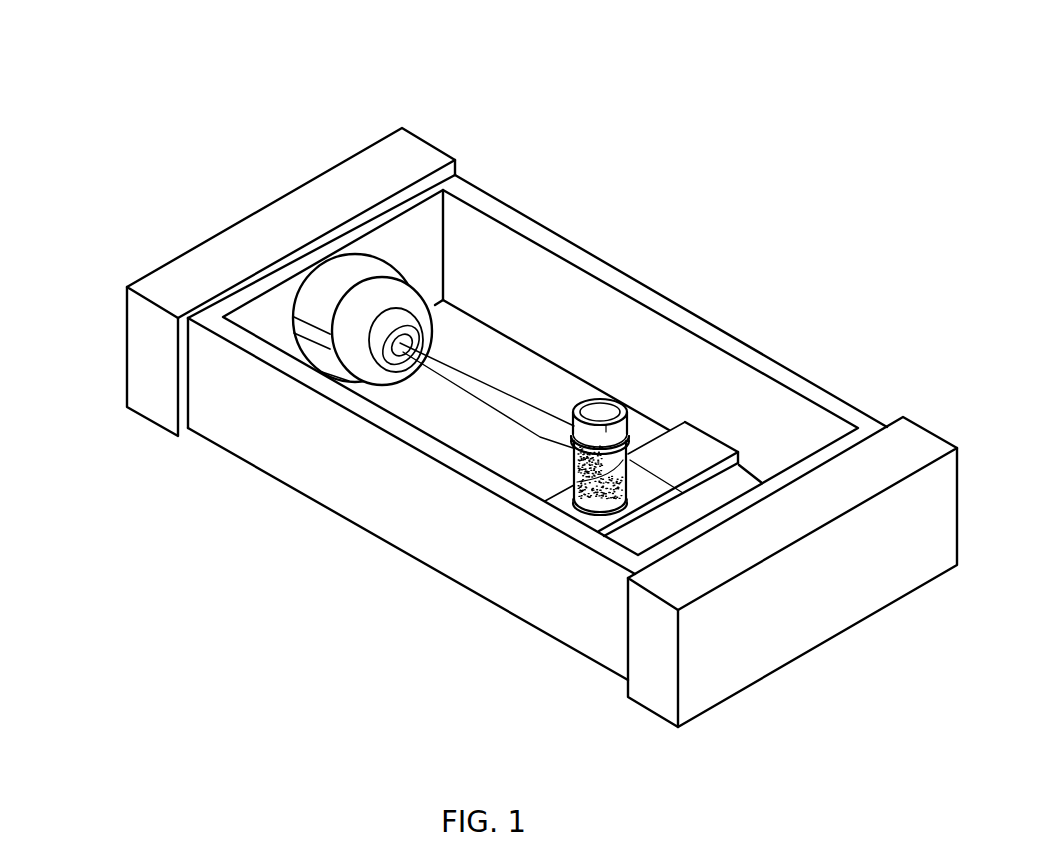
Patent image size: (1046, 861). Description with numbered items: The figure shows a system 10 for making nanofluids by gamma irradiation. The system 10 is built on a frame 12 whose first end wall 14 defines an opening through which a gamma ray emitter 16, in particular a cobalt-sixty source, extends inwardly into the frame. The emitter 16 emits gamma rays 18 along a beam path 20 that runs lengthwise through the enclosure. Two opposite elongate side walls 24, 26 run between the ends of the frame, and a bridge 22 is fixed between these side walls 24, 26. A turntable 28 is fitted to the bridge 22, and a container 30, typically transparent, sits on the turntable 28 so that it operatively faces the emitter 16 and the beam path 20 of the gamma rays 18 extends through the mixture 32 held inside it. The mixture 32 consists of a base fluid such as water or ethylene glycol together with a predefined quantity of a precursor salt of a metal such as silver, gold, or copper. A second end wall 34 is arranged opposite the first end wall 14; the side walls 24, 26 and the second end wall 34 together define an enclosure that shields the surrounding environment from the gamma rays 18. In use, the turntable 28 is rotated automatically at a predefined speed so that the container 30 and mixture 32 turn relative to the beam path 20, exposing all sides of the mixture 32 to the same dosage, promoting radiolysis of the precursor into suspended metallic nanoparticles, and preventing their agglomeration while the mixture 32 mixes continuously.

The system 10 is at (168, 80).
The frame 12 is at (148, 226).
The first end wall 14 is at (285, 222).
The gamma ray emitter 16 is at (419, 333).
The gamma rays 18 is at (440, 366).
The beam path 20 is at (508, 388).
The bridge 22 is at (707, 447).
The side wall 24 is at (287, 448).
The side wall 26 is at (652, 300).
The turntable 28 is at (592, 512).
The container 30 is at (628, 437).
The mixture 32 is at (583, 482).
The second end wall 34 is at (760, 535).